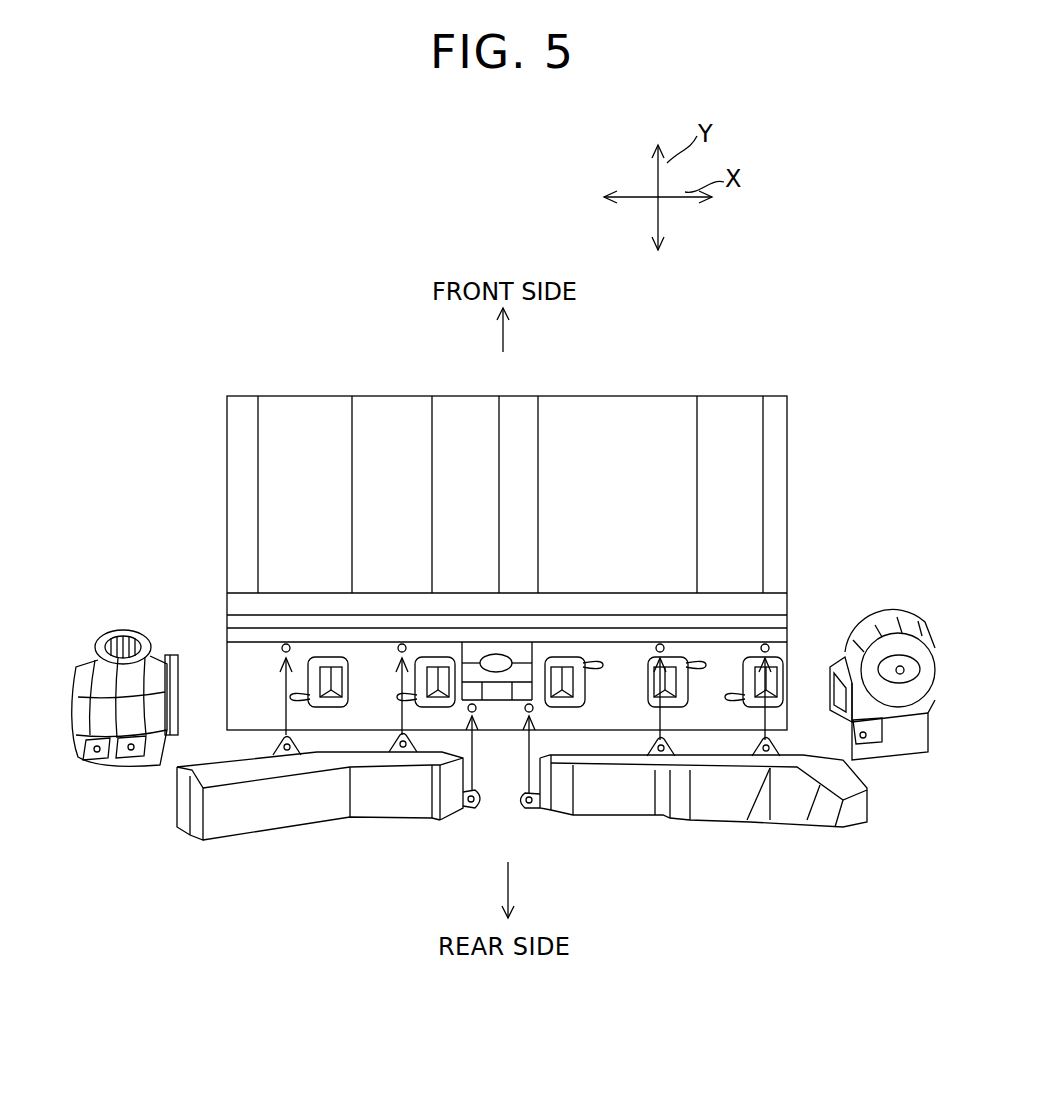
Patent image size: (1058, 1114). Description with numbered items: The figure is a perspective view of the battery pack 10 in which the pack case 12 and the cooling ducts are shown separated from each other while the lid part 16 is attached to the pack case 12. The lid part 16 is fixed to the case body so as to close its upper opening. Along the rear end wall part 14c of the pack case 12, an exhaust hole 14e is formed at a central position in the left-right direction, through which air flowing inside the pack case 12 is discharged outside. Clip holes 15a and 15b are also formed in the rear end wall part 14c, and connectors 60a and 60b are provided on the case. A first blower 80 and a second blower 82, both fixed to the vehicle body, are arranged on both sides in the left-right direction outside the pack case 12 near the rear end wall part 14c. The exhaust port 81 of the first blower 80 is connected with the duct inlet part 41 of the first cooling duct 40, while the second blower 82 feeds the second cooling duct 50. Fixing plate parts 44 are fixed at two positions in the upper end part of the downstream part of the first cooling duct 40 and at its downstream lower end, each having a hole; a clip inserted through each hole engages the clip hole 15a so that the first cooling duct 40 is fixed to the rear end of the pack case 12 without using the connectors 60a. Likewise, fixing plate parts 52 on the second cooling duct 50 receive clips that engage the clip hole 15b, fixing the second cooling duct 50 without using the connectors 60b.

The battery pack 10 is at (696, 335).
The pack case 12 is at (600, 392).
The lid part 16 is at (729, 433).
The rear end wall part 14c is at (618, 680).
The exhaust hole 14e is at (497, 655).
The clip hole 15a is at (292, 647).
The clip hole 15b is at (668, 648).
The connector 60a is at (350, 675).
The connector 60b is at (567, 657).
The first cooling duct 40 is at (270, 833).
The duct inlet part 41 is at (178, 805).
The fixing plate part 44 is at (282, 745).
The second cooling duct 50 is at (713, 827).
The fixing plate part 52 is at (528, 812).
The first blower 80 is at (86, 660).
The exhaust port 81 is at (185, 697).
The second blower 82 is at (880, 612).